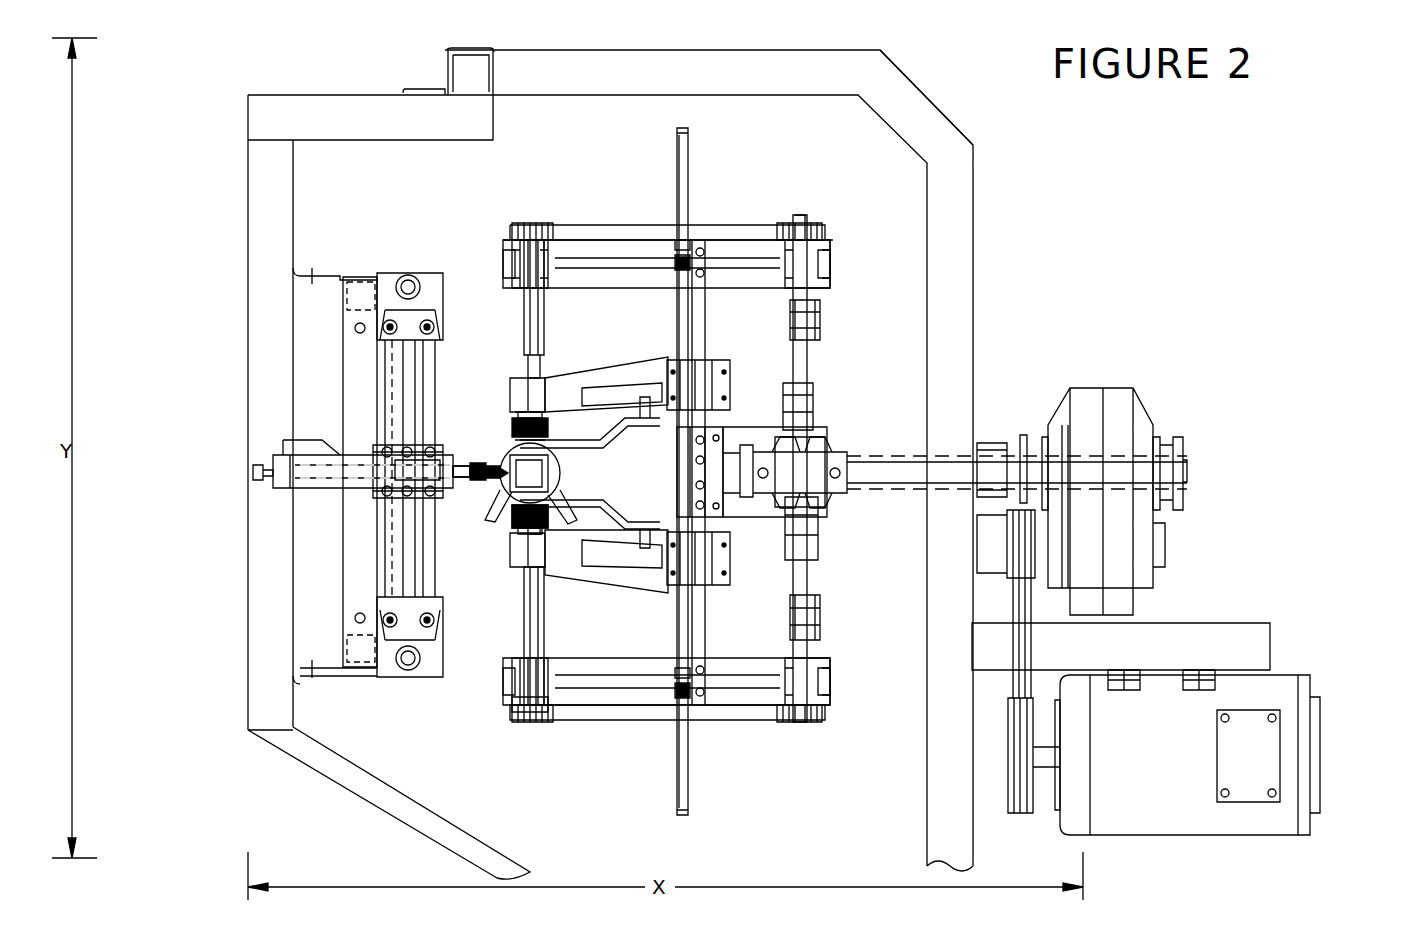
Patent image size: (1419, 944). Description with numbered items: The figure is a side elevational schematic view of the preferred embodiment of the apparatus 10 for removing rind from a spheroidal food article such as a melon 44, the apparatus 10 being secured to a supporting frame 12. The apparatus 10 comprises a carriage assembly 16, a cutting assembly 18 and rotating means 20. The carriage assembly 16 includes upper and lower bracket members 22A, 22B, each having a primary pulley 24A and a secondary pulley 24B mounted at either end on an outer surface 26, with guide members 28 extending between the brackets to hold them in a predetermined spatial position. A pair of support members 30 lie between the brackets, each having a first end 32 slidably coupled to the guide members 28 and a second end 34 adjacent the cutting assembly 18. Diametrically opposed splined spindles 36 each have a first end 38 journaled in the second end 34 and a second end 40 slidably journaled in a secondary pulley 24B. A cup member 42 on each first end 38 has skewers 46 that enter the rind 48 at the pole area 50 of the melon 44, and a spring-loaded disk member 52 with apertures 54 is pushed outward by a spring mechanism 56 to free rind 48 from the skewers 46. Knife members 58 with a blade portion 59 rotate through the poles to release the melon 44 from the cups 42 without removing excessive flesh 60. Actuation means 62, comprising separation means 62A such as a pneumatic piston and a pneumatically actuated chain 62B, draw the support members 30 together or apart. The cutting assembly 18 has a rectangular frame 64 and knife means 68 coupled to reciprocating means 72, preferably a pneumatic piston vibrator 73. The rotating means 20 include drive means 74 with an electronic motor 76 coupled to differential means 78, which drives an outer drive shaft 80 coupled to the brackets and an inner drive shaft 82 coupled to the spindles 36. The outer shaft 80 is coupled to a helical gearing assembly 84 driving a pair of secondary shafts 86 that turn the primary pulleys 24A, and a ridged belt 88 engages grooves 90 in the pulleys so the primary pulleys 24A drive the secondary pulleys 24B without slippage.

The apparatus 10 is at (595, 185).
The frame 12 is at (945, 222).
The carriage assembly 16 is at (812, 155).
The cutting assembly 18 is at (405, 252).
The rotating means 20 is at (1180, 405).
The upper bracket member 22A is at (823, 265).
The lower bracket member 22B is at (606, 660).
The primary pulley 24A is at (820, 724).
The secondary pulley 24B is at (545, 712).
The outer surface 26 is at (640, 773).
The guide members 28 is at (702, 622).
The support members 30 is at (622, 578).
The first end 32 is at (730, 560).
The second end 34 is at (512, 556).
The splined spindles 36 is at (545, 635).
The first end 38 is at (547, 393).
The second end 40 is at (520, 248).
The cup member 42 is at (516, 425).
The melon 44 is at (512, 491).
The skewers 46 is at (548, 425).
The rind 48 is at (517, 521).
The pole area 50 is at (378, 493).
The spring-loaded disk member 52 is at (522, 446).
The apertures 54 is at (516, 528).
The spring mechanism 56 is at (546, 545).
The knife members 58 is at (612, 388).
The blade portion 59 is at (610, 492).
The flesh 60 is at (480, 640).
The actuation means 62 is at (722, 342).
The separation means 62A is at (680, 756).
The pneumatically actuated chain 62B is at (695, 521).
The rectangular frame 64 is at (408, 493).
The knife means 68 is at (455, 466).
The reciprocating means 72 is at (300, 493).
The pneumatic piston vibrator 73 is at (300, 462).
The drive means 74 is at (1232, 580).
The electronic motor 76 is at (1278, 680).
The differential means 78 is at (1085, 405).
The outer drive shaft 80 is at (962, 548).
The inner drive shaft 82 is at (940, 487).
The helical gearing assembly 84 is at (818, 516).
The secondary shafts 86 is at (803, 572).
The belt 88 is at (755, 712).
The grooves 90 is at (510, 705).